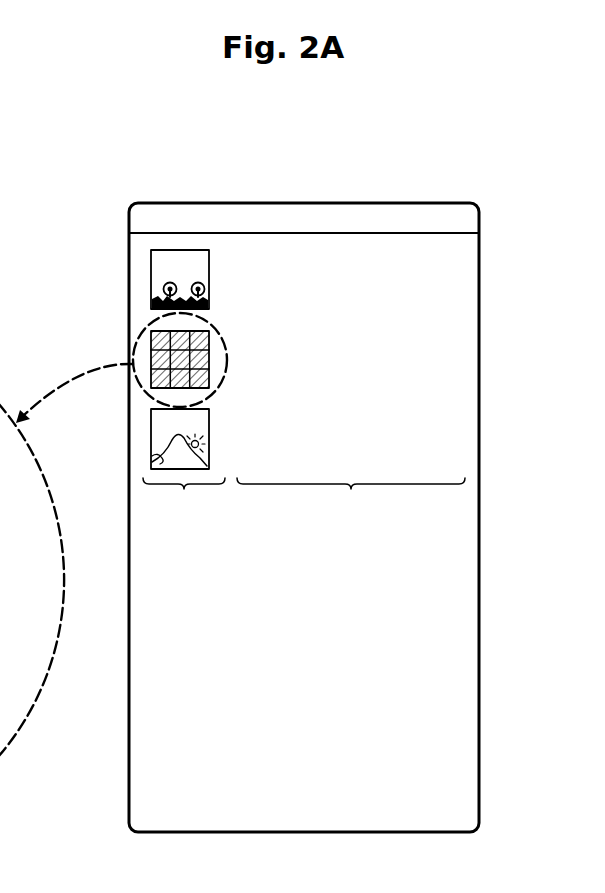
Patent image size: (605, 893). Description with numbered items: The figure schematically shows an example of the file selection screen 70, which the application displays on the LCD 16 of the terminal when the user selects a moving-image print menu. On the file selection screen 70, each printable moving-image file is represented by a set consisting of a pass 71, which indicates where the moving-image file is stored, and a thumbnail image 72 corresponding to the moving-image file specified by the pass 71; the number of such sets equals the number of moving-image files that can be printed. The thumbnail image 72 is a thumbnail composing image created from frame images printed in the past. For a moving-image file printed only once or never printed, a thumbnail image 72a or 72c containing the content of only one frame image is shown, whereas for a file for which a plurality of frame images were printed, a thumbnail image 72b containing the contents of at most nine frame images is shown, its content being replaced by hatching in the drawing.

The file selection screen 70 is at (503, 194).
The LCD 16 is at (189, 203).
The thumbnail image 72a is at (151, 282).
The thumbnail image 72b is at (151, 341).
The thumbnail image 72c is at (151, 443).
The thumbnail image 72 is at (184, 502).
The pass 71 is at (351, 393).